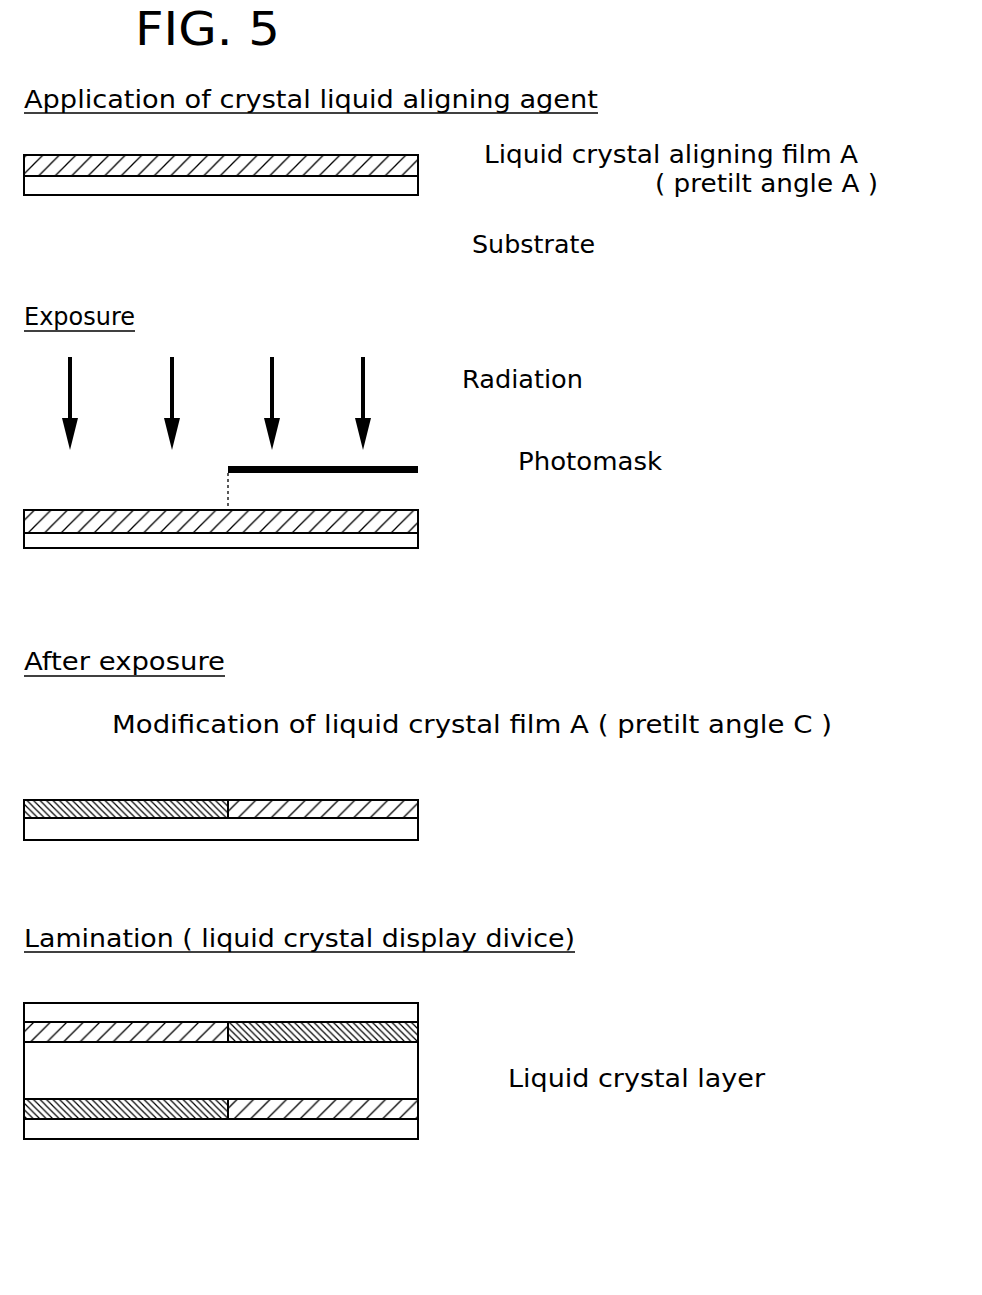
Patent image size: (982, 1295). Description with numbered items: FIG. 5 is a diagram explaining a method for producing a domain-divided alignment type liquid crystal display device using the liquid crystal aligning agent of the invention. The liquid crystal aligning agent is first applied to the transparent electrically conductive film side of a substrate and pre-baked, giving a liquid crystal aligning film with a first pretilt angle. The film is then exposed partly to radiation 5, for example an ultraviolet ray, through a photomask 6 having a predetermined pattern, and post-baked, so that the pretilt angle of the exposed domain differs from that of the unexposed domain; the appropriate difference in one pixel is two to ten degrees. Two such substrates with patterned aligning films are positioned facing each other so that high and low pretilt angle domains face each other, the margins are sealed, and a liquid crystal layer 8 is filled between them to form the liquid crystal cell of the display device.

The radiation 5 is at (366, 386).
The photomask 6 is at (418, 470).
The liquid crystal layer 8 is at (410, 1066).